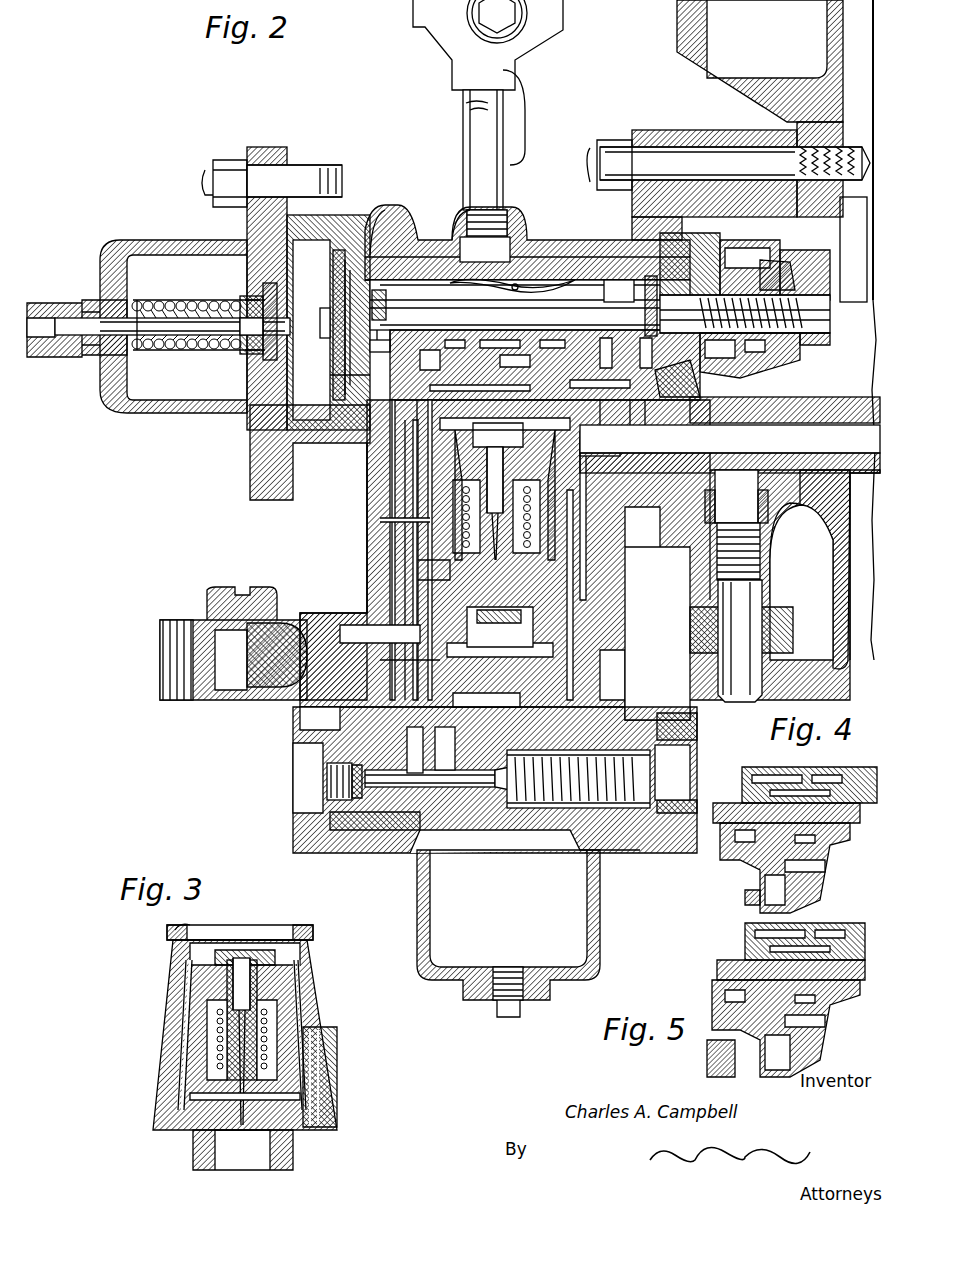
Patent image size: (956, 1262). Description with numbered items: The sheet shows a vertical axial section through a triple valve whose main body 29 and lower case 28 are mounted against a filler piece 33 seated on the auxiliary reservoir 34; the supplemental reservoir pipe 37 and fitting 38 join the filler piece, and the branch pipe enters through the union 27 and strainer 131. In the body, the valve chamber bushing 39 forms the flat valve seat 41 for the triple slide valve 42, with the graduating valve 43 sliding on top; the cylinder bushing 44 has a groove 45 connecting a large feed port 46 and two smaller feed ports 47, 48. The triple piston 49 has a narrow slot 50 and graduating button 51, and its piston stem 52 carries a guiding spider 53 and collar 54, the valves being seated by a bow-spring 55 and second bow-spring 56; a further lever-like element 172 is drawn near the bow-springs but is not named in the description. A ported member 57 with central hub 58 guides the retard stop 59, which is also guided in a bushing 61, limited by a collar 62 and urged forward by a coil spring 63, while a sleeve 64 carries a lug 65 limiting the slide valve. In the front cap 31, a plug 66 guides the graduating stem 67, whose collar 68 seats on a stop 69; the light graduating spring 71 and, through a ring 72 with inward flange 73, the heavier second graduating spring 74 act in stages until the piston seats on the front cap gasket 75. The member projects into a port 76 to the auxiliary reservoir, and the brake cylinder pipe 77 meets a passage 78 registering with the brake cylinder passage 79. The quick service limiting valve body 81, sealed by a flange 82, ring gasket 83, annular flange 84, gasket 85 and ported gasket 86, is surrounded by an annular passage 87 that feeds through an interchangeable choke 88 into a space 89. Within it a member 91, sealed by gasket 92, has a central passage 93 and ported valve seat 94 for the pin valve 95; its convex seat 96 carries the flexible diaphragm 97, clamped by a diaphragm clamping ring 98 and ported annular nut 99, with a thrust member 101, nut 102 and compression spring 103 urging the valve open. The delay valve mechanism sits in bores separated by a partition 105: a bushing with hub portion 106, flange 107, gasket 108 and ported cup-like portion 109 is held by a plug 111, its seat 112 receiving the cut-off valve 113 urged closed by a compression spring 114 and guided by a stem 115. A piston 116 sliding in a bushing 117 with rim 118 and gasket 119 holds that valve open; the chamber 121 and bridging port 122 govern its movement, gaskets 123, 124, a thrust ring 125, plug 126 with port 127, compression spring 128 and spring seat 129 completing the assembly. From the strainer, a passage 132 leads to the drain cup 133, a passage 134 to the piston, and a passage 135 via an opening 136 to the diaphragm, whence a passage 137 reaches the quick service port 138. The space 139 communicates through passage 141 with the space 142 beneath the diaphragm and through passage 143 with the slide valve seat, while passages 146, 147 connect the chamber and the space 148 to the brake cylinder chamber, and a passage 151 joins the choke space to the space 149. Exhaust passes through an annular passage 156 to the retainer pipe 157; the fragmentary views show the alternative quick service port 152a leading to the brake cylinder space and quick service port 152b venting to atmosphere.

In FIG. 2, the union 27 is at (235, 587).
In FIG. 2, the lower case 28 is at (632, 661).
In FIG. 2, the main body 29 is at (540, 240).
In FIG. 2, the front cap 31 is at (160, 243).
In FIG. 2, the filler piece 33 is at (720, 130).
In FIG. 2, the auxiliary reservoir 34 is at (830, 43).
In FIG. 2, the supplemental reservoir pipe 37 is at (765, 668).
In FIG. 2, the fitting 38 is at (770, 566).
In FIG. 2, the valve chamber bushing 39 is at (400, 240).
In FIG. 4, the valve chamber bushing 39 is at (728, 812).
In FIG. 5, the valve chamber bushing 39 is at (725, 965).
In FIG. 2, the flat valve seat 41 is at (379, 351).
In FIG. 4, the flat valve seat 41 is at (738, 795).
In FIG. 5, the flat valve seat 41 is at (735, 955).
In FIG. 2, the triple slide valve 42 is at (618, 340).
In FIG. 2, the graduating valve 43 is at (578, 250).
In FIG. 2, the cylinder bushing 44 is at (330, 197).
In FIG. 2, the groove 45 is at (375, 215).
In FIG. 2, the feed port 46 is at (350, 212).
In FIG. 2, the feed port 47 is at (380, 218).
In FIG. 2, the feed port 48 is at (362, 212).
In FIG. 2, the triple piston 49 is at (332, 278).
In FIG. 2, the narrow slot 50 is at (342, 285).
In FIG. 2, the graduating button 51 is at (322, 322).
In FIG. 2, the piston stem 52 is at (426, 245).
In FIG. 2, the guiding spider 53 is at (640, 232).
In FIG. 2, the collar 54 is at (378, 318).
In FIG. 2, the bow-spring 55 is at (445, 318).
In FIG. 2, the second bow-spring 56 is at (467, 257).
In FIG. 2, the ported member 57 is at (762, 272).
In FIG. 2, the central hub 58 is at (732, 262).
In FIG. 2, the retard stop 59 is at (822, 308).
In FIG. 2, the bushing 61 is at (815, 340).
In FIG. 2, the collar 62 is at (715, 382).
In FIG. 2, the coil spring 63 is at (805, 290).
In FIG. 2, the sleeve 64 is at (750, 368).
In FIG. 2, the lug 65 is at (630, 306).
In FIG. 2, the plug 66 is at (52, 357).
In FIG. 2, the graduating stem 67 is at (98, 318).
In FIG. 2, the collar 68 is at (328, 322).
In FIG. 2, the stop 69 is at (270, 360).
In FIG. 2, the graduating spring 71 is at (205, 350).
In FIG. 2, the ring 72 is at (248, 356).
In FIG. 2, the inward flange 73 is at (255, 300).
In FIG. 2, the second graduating spring 74 is at (178, 352).
In FIG. 2, the front cap gasket 75 is at (275, 458).
In FIG. 2, the port 76 is at (833, 217).
In FIG. 2, the brake cylinder pipe 77 is at (858, 410).
In FIG. 2, the passage 78 is at (730, 449).
In FIG. 2, the brake cylinder passage 79 is at (654, 426).
In FIG. 2, the quick service limiting valve body 81 is at (395, 485).
In FIG. 3, the quick service limiting valve body 81 is at (170, 992).
In FIG. 3, the flange 82 is at (315, 935).
In FIG. 3, the ring gasket 83 is at (305, 928).
In FIG. 3, the annular flange 84 is at (338, 1043).
In FIG. 2, the gasket 85 is at (380, 522).
In FIG. 2, the ported gasket 86 is at (365, 605).
In FIG. 2, the annular passage 87 is at (542, 478).
In FIG. 4, the annular passage 87 is at (765, 905).
In FIG. 5, the annular passage 87 is at (805, 1050).
In FIG. 2, the interchangeable choke 88 is at (572, 437).
In FIG. 2, the space 89 is at (540, 455).
In FIG. 4, the space 89 is at (835, 858).
In FIG. 5, the space 89 is at (848, 1003).
In FIG. 3, the member 91 is at (295, 1000).
In FIG. 3, the gasket 92 is at (298, 968).
In FIG. 3, the central passage 93 is at (237, 958).
In FIG. 3, the ported valve seat 94 is at (207, 1040).
In FIG. 3, the pin valve 95 is at (300, 1080).
In FIG. 3, the convex seat 96 is at (305, 1090).
In FIG. 3, the flexible diaphragm 97 is at (190, 1090).
In FIG. 3, the diaphragm clamping ring 98 is at (300, 1100).
In FIG. 3, the ported annular nut 99 is at (293, 1155).
In FIG. 3, the thrust member 101 is at (243, 1147).
In FIG. 3, the nut 102 is at (215, 1075).
In FIG. 3, the compression spring 103 is at (300, 1020).
In FIG. 2, the partition 105 is at (480, 830).
In FIG. 2, the hub portion 106 is at (412, 820).
In FIG. 2, the flange 107 is at (395, 820).
In FIG. 2, the gasket 108 is at (435, 825).
In FIG. 2, the ported cup-like portion 109 is at (345, 850).
In FIG. 2, the plug 111 is at (300, 818).
In FIG. 2, the seat 112 is at (370, 820).
In FIG. 2, the cut-off valve 113 is at (325, 832).
In FIG. 2, the compression spring 114 is at (335, 792).
In FIG. 2, the stem 115 is at (325, 770).
In FIG. 2, the piston 116 is at (532, 835).
In FIG. 2, the bushing 117 is at (556, 838).
In FIG. 2, the rim 118 is at (515, 838).
In FIG. 2, the gasket 119 is at (500, 838).
In FIG. 2, the chamber 121 is at (495, 830).
In FIG. 2, the bridging port 122 is at (600, 700).
In FIG. 2, the gasket 123 is at (510, 835).
In FIG. 2, the gasket 124 is at (608, 850).
In FIG. 2, the thrust ring 125 is at (660, 712).
In FIG. 2, the plug 126 is at (695, 760).
In FIG. 2, the port 127 is at (680, 740).
In FIG. 2, the compression spring 128 is at (592, 779).
In FIG. 2, the spring seat 129 is at (620, 842).
In FIG. 2, the strainer 131 is at (285, 623).
In FIG. 2, the passage 132 is at (395, 665).
In FIG. 2, the drain cup 133 is at (588, 911).
In FIG. 2, the passage 134 is at (366, 545).
In FIG. 2, the passage 135 is at (385, 640).
In FIG. 2, the opening 136 is at (400, 503).
In FIG. 3, the opening 136 is at (195, 1020).
In FIG. 2, the passage 137 is at (366, 472).
In FIG. 3, the passage 137 is at (188, 975).
In FIG. 2, the quick service port 138 is at (360, 379).
In FIG. 2, the space 139 is at (736, 496).
In FIG. 2, the passage 141 is at (655, 547).
In FIG. 2, the space 142 is at (615, 605).
In FIG. 2, the passage 143 is at (628, 436).
In FIG. 2, the passage 146 is at (620, 625).
In FIG. 2, the passage 147 is at (612, 645).
In FIG. 2, the space 148 is at (450, 820).
In FIG. 2, the space 149 is at (315, 726).
In FIG. 2, the passage 151 is at (418, 567).
In FIG. 4, the quick service port 152a is at (745, 893).
In FIG. 5, the quick service port 152b is at (720, 1050).
In FIG. 2, the annular passage 156 is at (457, 215).
In FIG. 2, the retainer pipe 157 is at (498, 172).
In FIG. 2, the lever 172 is at (535, 318).